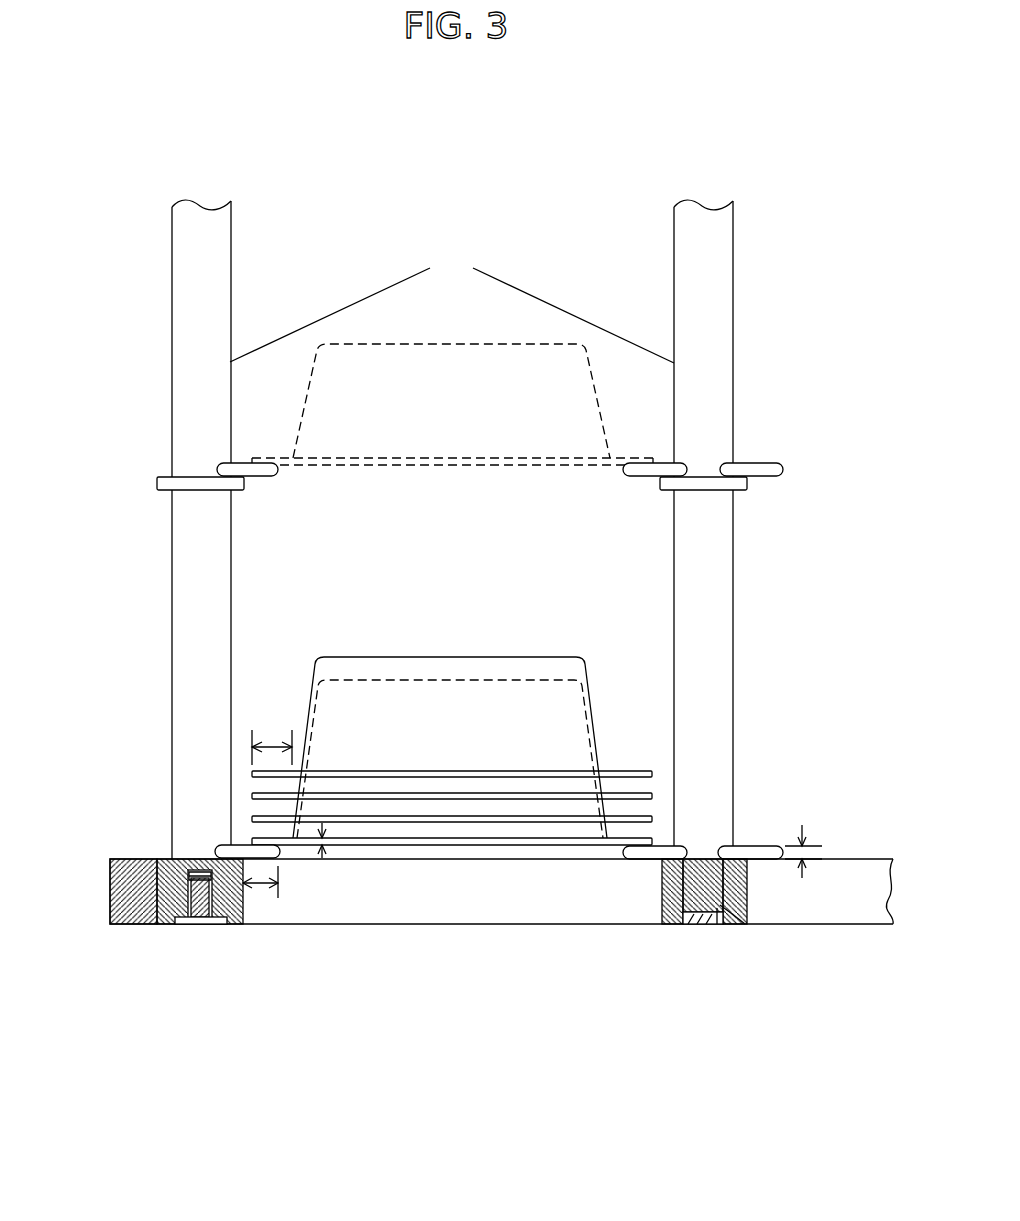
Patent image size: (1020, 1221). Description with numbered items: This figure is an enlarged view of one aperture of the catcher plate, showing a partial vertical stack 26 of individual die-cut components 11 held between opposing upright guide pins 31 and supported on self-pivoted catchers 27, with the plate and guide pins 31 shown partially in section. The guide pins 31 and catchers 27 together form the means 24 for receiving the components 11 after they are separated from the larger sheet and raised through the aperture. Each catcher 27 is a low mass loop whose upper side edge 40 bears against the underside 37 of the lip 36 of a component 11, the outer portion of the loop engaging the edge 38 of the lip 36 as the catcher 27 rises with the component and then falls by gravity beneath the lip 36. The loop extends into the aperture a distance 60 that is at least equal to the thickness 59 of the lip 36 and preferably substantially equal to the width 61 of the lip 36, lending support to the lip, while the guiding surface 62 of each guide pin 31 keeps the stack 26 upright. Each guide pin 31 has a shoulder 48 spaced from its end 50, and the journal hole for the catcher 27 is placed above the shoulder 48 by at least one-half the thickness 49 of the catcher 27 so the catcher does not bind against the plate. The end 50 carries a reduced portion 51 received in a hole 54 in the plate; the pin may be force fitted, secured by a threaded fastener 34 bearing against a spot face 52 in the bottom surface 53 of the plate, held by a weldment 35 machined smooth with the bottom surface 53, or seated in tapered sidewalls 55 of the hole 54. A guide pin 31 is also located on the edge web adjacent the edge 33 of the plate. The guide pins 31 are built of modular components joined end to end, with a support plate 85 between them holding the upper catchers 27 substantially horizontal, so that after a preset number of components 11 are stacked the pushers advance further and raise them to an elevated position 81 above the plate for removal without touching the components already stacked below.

The individual die-cut component 11 is at (467, 665).
The means for receiving 24 is at (608, 273).
The vertical stack 26 is at (133, 722).
The self-pivoted catcher 27 is at (752, 846).
The guide pin 31 is at (230, 283).
The edge of catcher plate 33 is at (110, 898).
The threaded fastener 34 is at (207, 924).
The weldment 35 is at (690, 923).
The lip 36 is at (628, 771).
The underside of lip 37 is at (266, 824).
The edge of lip 38 is at (248, 842).
The upper side edge 40 is at (773, 846).
The shoulder 48 is at (683, 862).
The thickness of catcher 49 is at (815, 846).
The end of guide pin 50 is at (702, 924).
The reduced portion 51 is at (683, 882).
The spot face 52 is at (178, 924).
The bottom surface of catcher plate 53 is at (132, 924).
The hole in catcher plate 54 is at (717, 924).
The tapered sidewalls 55 is at (745, 924).
The thickness of lip 59 is at (330, 845).
The distance 60 is at (262, 883).
The width of lip 61 is at (274, 745).
The guiding surface 62 is at (452, 302).
The elevated position 81 is at (832, 363).
The support plate 85 is at (673, 483).